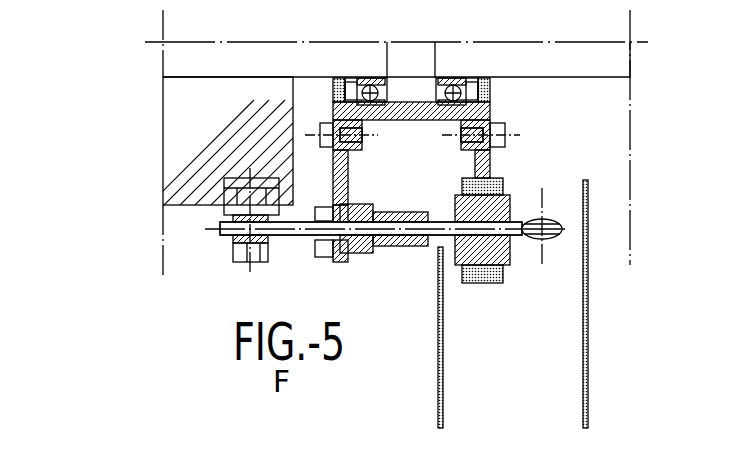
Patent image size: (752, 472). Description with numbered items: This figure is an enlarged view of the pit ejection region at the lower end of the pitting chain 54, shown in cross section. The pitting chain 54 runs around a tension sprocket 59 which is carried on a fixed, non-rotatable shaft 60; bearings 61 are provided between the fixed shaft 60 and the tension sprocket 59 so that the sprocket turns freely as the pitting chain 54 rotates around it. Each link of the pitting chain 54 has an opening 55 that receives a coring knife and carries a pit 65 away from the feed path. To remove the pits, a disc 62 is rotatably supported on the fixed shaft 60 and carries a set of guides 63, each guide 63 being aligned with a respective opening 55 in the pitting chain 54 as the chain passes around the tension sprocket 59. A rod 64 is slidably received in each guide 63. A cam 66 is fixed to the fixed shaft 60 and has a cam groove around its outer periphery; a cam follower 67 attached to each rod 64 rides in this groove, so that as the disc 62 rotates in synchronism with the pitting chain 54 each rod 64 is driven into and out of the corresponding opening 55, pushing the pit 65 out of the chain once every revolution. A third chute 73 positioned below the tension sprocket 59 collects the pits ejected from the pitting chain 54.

The pitting chain 54 is at (510, 249).
The opening 55 is at (510, 211).
The tension sprocket 59 is at (497, 157).
The fixed shaft 60 is at (545, 65).
The bearings 61 is at (385, 78).
The disc 62 is at (382, 246).
The guide 63 is at (360, 253).
The rod 64 is at (300, 233).
The pit 65 is at (563, 225).
The cam 66 is at (195, 107).
The cam follower 67 is at (230, 200).
The third chute 73 is at (517, 312).